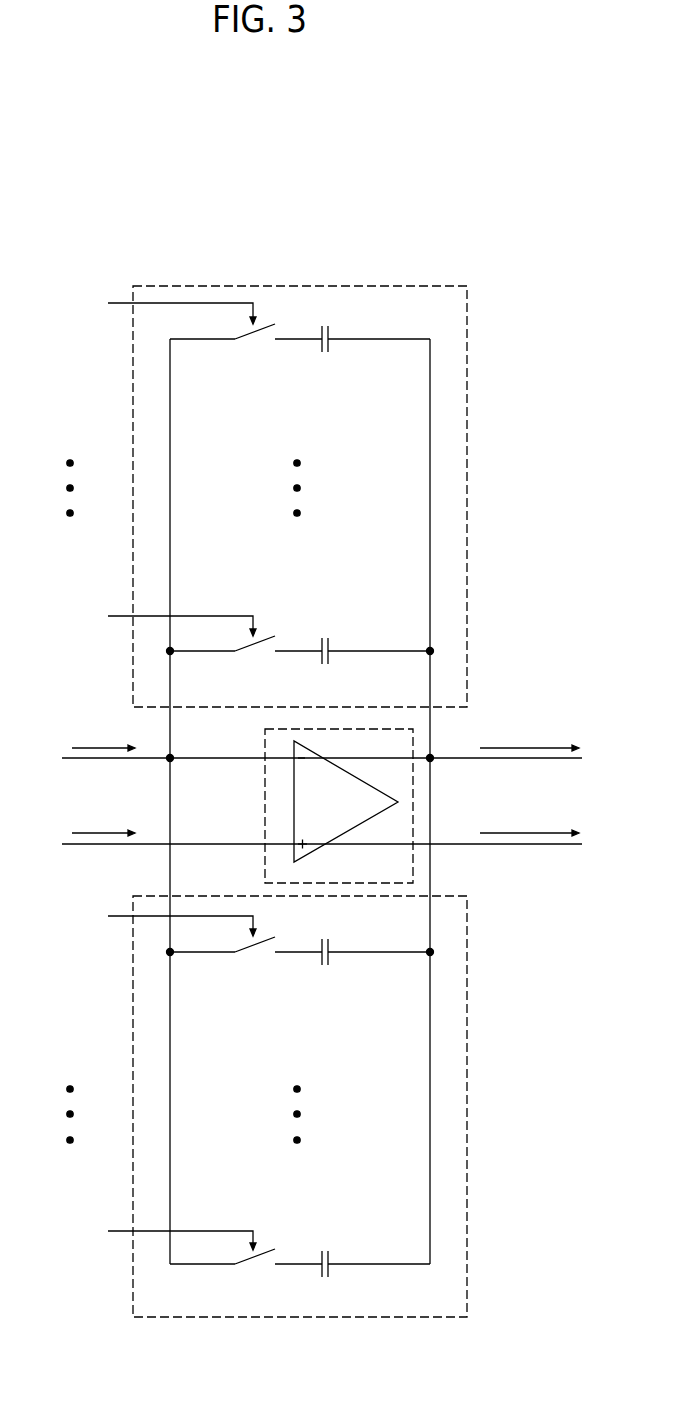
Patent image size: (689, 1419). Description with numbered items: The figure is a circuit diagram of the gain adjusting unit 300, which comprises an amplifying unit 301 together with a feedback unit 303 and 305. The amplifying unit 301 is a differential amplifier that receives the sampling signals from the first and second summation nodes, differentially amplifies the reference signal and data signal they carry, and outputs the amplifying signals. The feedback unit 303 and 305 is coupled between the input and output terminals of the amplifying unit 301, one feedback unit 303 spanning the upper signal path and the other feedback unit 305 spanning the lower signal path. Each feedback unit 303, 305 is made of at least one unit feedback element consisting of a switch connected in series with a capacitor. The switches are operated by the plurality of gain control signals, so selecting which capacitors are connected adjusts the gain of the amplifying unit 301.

The gain adjusting unit 300 is at (144, 236).
The amplifying unit 301 is at (415, 803).
The feedback unit 303 is at (467, 497).
The feedback unit 305 is at (467, 1108).